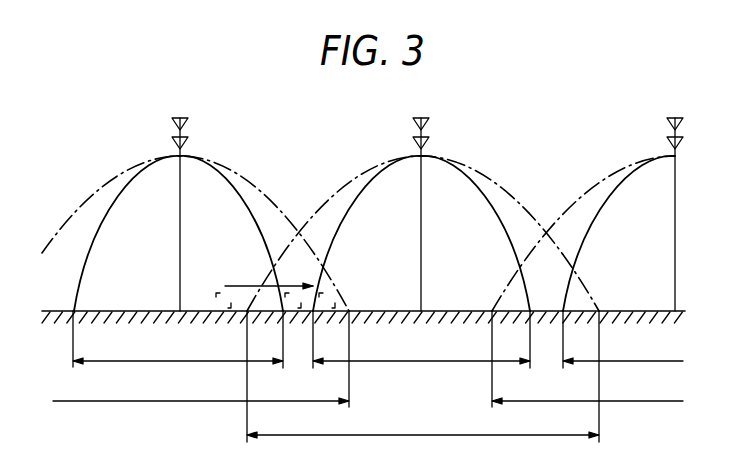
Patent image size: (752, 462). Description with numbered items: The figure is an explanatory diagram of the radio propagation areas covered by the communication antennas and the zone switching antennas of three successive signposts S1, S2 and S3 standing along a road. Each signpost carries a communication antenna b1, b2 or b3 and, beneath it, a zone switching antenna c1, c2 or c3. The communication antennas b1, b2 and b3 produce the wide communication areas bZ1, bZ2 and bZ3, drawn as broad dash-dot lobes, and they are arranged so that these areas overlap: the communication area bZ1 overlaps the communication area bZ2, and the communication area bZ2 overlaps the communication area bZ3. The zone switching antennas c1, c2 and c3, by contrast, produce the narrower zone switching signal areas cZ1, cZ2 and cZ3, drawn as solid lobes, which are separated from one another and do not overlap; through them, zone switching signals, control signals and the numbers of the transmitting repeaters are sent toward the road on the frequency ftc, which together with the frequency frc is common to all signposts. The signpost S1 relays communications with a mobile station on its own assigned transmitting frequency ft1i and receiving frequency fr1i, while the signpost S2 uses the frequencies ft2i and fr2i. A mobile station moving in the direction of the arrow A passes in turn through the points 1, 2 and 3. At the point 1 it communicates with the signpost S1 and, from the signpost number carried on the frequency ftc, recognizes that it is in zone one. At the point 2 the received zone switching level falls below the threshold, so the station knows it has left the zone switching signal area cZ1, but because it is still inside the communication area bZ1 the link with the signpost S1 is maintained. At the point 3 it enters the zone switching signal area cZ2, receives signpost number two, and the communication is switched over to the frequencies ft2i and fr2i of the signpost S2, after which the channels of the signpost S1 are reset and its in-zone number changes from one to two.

The communication antenna b1 is at (173, 118).
The zone switching antenna c1 is at (173, 142).
The signpost S1 is at (183, 188).
The communication antenna b2 is at (413, 120).
The zone switching antenna c2 is at (413, 141).
The signpost S2 is at (423, 189).
The communication antenna b3 is at (667, 120).
The zone switching antenna c3 is at (667, 142).
The signpost S3 is at (675, 202).
The transmitting frequency ft1i is at (195, 233).
The receiving frequency fr1i is at (195, 233).
The transmitting frequency ft2i is at (461, 233).
The receiving frequency fr2i is at (461, 233).
The zone switching frequency ftc is at (374, 233).
The common receiving frequency frc is at (419, 156).
The arrow A is at (269, 276).
The point 1 is at (223, 300).
The point 2 is at (293, 300).
The point 3 is at (327, 300).
The zone switching signal area cZ1 is at (178, 339).
The zone switching signal area cZ2 is at (421, 339).
The zone switching signal area cZ3 is at (623, 339).
The communication area bZ1 is at (201, 359).
The communication area bZ2 is at (423, 376).
The communication area bZ3 is at (587, 359).